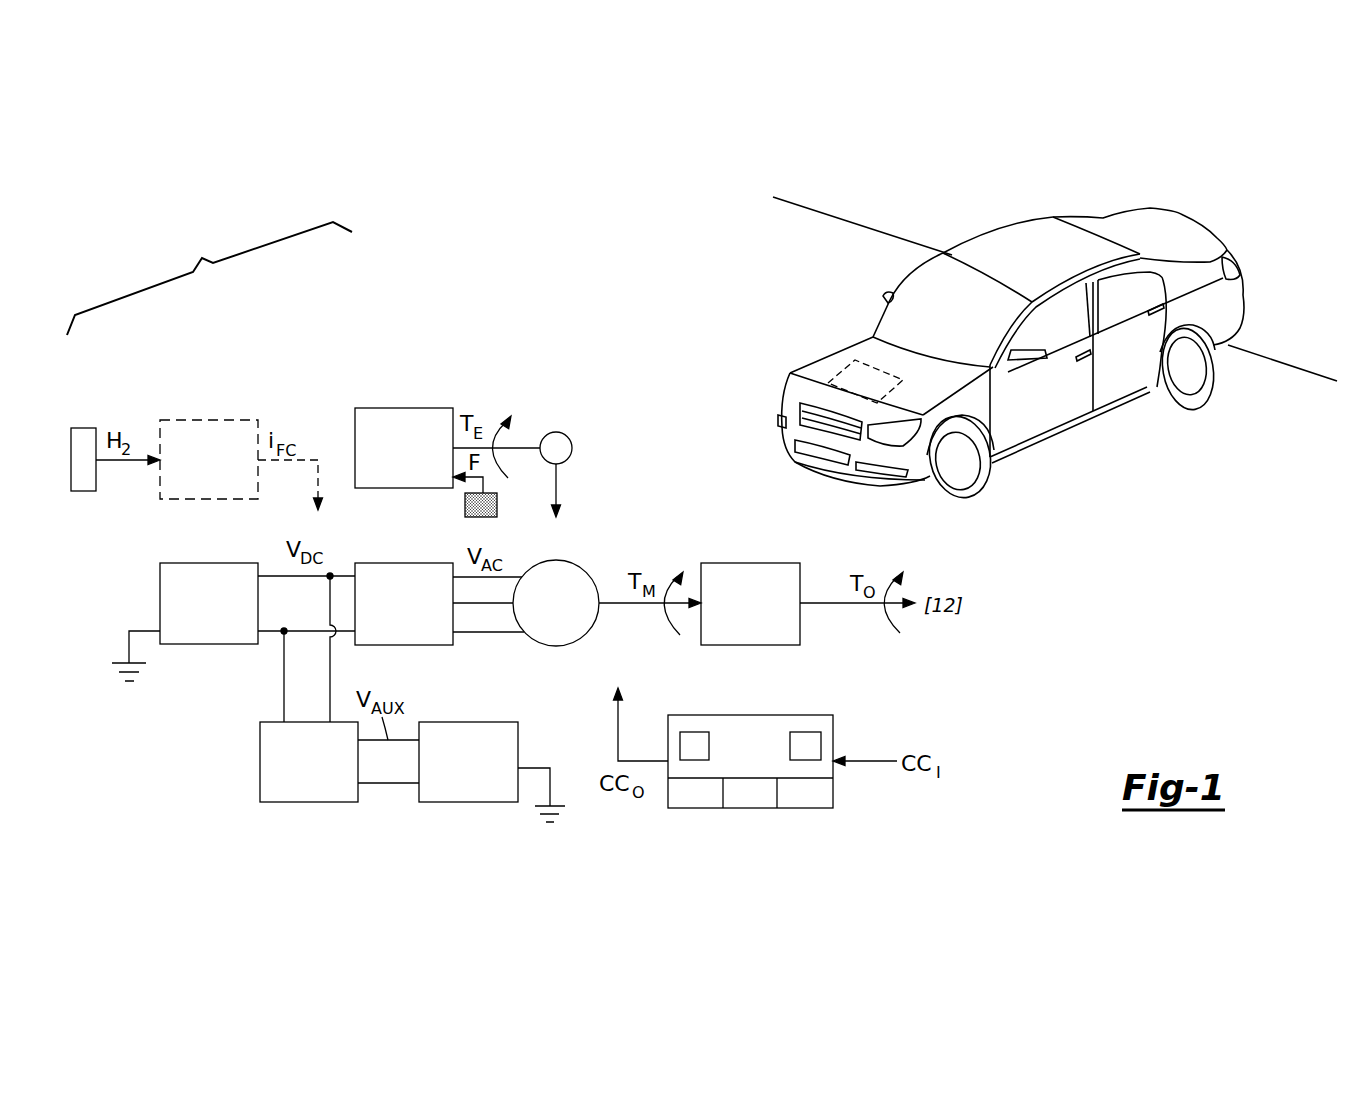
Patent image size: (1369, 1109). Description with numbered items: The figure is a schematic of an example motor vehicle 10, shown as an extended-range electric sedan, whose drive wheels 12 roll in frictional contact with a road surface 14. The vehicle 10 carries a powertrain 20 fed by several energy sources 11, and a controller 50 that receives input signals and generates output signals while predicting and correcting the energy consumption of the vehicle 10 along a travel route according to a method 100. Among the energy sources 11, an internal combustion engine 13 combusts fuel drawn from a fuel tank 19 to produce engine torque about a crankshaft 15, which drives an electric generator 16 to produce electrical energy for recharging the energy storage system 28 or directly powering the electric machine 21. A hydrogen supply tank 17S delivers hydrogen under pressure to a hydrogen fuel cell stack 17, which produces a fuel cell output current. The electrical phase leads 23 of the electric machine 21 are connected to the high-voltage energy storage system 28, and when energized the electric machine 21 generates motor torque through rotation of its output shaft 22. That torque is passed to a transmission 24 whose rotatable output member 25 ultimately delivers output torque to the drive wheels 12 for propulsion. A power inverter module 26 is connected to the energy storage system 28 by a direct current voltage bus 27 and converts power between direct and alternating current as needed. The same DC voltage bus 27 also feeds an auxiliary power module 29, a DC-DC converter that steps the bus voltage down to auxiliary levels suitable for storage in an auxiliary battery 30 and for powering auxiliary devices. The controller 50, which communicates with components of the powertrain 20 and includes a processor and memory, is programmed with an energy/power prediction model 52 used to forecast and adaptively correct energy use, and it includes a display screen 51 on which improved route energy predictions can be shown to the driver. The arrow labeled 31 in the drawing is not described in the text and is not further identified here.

The motor vehicle 10 is at (983, 218).
The energy sources 11 is at (209, 278).
The drive wheels 12 is at (1183, 407).
The internal combustion engine 13 is at (405, 408).
The road surface 14 is at (1275, 385).
The crankshaft 15 is at (527, 448).
The electric generator 16 is at (555, 432).
The hydrogen fuel cell stack 17 is at (205, 420).
The hydrogen supply tank 17S is at (83, 428).
The fuel tank 19 is at (497, 505).
The powertrain 20 is at (290, 362).
The electric machine 21 is at (557, 562).
The output shaft 22 is at (636, 606).
The electrical phase leads 23 is at (485, 632).
The transmission 24 is at (752, 563).
The rotatable output member 25 is at (851, 606).
The power inverter module 26 is at (405, 563).
The direct current voltage bus 27 is at (284, 690).
The energy storage system 28 is at (209, 563).
The auxiliary power module 29 is at (309, 802).
The auxiliary battery 30 is at (467, 802).
The powertrain 31 is at (624, 543).
The controller 50 is at (779, 761).
The display screen 51 is at (805, 746).
The energy/power prediction model 52 is at (694, 746).
The method 100 is at (697, 793).